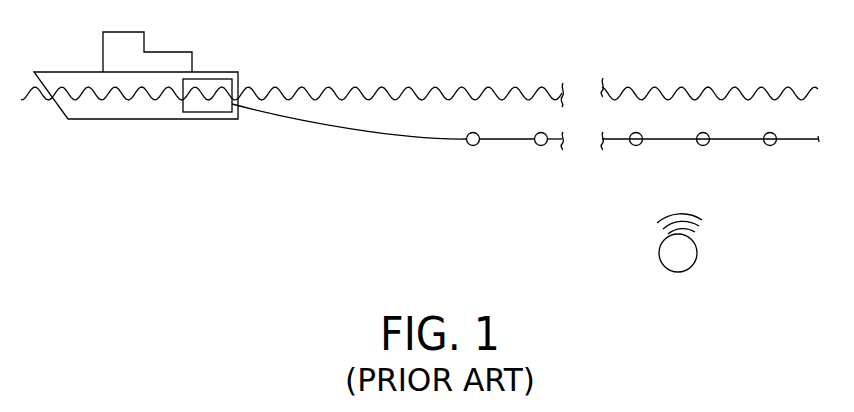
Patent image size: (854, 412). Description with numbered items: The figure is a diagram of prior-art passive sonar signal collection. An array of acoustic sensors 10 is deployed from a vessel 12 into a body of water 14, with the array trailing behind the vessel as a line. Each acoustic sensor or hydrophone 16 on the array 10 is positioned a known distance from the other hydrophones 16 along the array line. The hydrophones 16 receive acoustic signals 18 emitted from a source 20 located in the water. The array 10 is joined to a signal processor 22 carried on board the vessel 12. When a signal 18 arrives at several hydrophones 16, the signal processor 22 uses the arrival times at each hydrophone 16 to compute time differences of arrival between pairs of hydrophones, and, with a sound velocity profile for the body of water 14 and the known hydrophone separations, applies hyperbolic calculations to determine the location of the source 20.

The array of acoustic sensors 10 is at (423, 167).
The vessel 12 is at (210, 72).
The body of water 14 is at (309, 176).
The hydrophone 16 is at (541, 146).
The acoustic signal 18 is at (690, 213).
The source 20 is at (697, 257).
The signal processor 22 is at (212, 112).